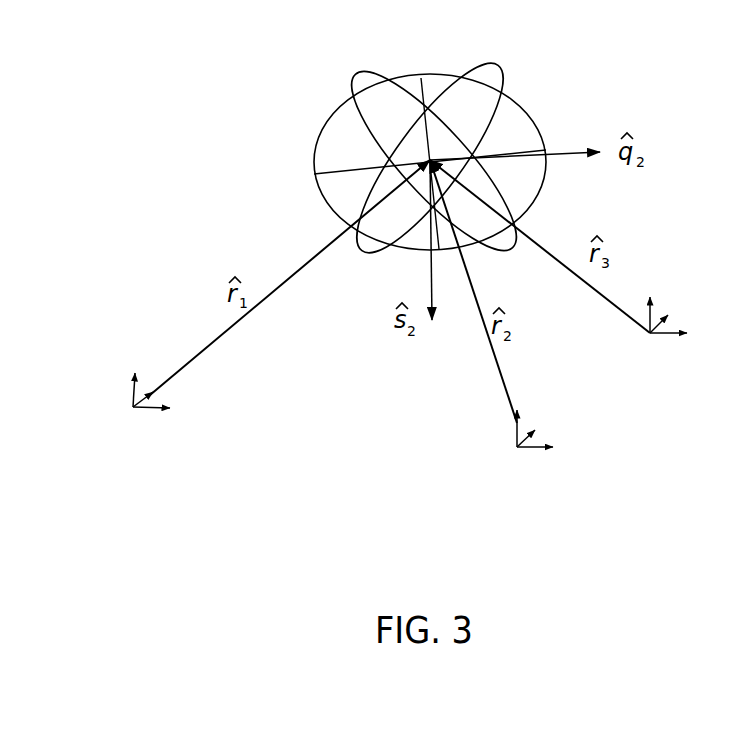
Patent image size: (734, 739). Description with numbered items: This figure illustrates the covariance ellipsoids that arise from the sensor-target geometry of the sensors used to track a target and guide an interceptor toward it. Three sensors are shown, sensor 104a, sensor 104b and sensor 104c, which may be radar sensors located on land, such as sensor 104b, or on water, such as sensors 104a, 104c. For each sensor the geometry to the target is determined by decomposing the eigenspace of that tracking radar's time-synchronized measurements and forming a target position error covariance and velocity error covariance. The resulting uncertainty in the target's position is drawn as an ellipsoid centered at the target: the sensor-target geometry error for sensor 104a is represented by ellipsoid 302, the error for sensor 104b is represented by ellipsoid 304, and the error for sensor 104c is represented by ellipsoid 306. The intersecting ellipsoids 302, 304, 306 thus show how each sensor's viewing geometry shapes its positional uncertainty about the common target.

The ellipsoid 302 is at (497, 65).
The ellipsoid 304 is at (528, 110).
The ellipsoid 306 is at (355, 80).
The sensor 104a is at (146, 428).
The sensor 104b is at (511, 462).
The sensor 104c is at (661, 350).